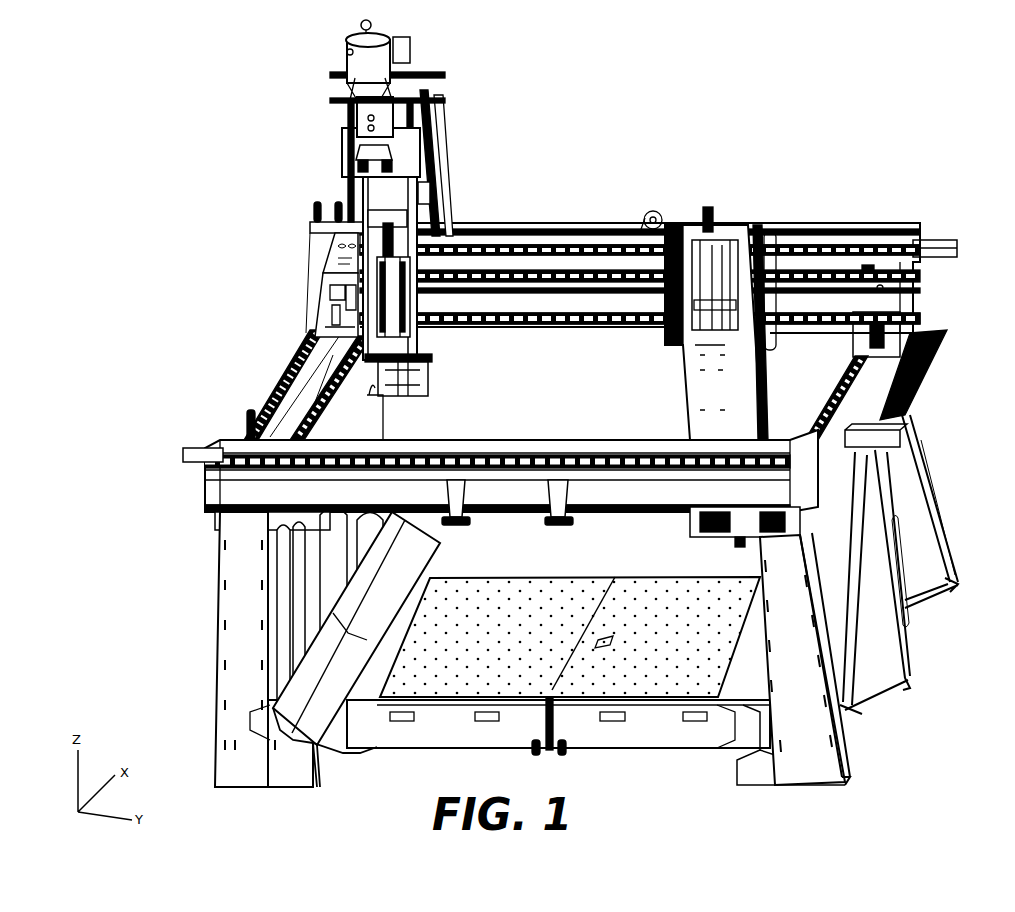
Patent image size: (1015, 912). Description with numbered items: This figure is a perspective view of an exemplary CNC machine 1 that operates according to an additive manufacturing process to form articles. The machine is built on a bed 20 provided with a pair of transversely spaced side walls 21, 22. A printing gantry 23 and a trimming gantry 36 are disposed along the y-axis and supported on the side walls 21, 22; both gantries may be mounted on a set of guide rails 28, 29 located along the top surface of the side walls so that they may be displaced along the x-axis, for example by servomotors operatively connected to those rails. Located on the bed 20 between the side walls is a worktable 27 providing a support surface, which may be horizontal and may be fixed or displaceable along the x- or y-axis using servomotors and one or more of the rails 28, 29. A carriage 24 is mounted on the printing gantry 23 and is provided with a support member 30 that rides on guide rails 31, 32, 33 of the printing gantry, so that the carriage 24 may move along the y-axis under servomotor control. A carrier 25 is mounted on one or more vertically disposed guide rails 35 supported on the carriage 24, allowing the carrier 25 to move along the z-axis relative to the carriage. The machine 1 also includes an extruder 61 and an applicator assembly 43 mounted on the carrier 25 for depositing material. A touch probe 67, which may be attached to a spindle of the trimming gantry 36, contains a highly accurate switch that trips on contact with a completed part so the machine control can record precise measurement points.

The CNC machine 1 is at (822, 126).
The bed 20 is at (470, 746).
The side wall 21 is at (219, 647).
The side wall 22 is at (948, 452).
The printing gantry 23 is at (875, 260).
The carriage 24 is at (442, 199).
The carrier 25 is at (348, 198).
The worktable 27 is at (556, 638).
The guide rail 28 is at (302, 390).
The guide rail 29 is at (848, 382).
The support member 30 is at (448, 228).
The guide rail 31 is at (572, 232).
The guide rail 32 is at (566, 215).
The guide rail 33 is at (515, 320).
The vertically disposed guide rail 35 is at (428, 340).
The trimming gantry 36 is at (250, 418).
The applicator assembly 43 is at (428, 396).
The extruder 61 is at (432, 190).
The touch probe 67 is at (738, 542).